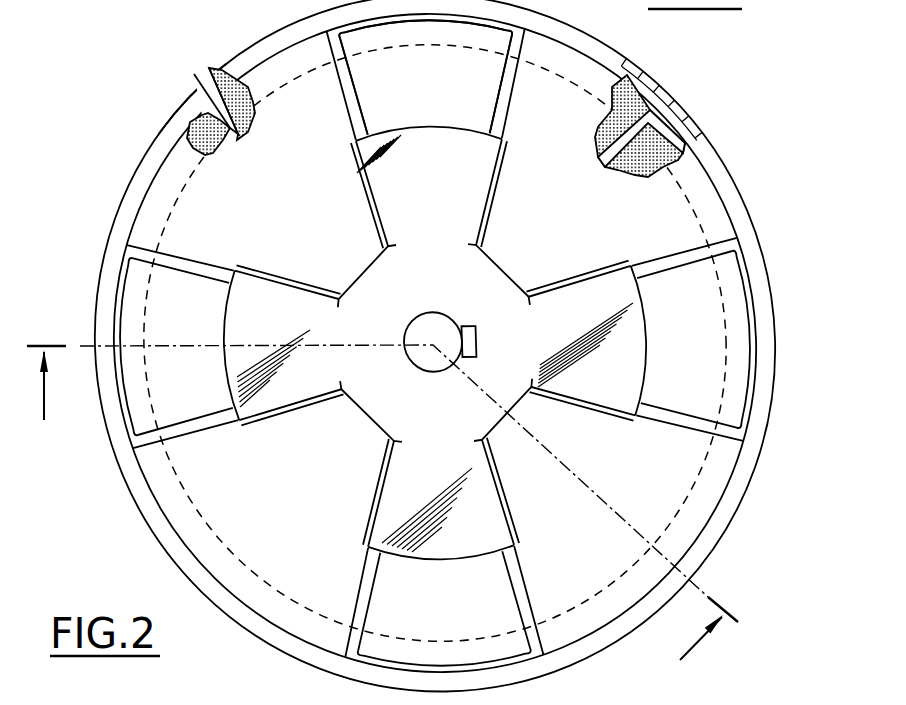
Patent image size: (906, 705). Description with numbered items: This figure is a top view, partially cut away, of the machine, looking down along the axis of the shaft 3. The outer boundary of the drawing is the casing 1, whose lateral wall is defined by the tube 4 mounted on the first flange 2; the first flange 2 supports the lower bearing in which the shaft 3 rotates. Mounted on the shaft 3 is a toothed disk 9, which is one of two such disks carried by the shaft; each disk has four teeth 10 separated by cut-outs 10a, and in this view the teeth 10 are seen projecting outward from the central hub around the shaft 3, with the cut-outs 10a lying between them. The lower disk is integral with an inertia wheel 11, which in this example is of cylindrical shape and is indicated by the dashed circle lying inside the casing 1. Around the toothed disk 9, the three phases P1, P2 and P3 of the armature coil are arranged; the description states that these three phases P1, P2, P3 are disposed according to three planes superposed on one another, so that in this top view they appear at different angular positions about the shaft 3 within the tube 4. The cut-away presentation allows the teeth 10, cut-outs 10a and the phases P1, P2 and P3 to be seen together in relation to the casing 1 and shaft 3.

The casing 1 is at (376, 517).
The first flange 2 is at (743, 484).
The shaft 3 is at (440, 328).
The tube 4 is at (191, 83).
The toothed disk 9 is at (297, 300).
The tooth 10 is at (398, 231).
The cut-out 10a is at (428, 346).
The inertia wheel 11 is at (170, 212).
The phase P1 is at (503, 72).
The phase P2 is at (700, 106).
The phase P3 is at (190, 118).